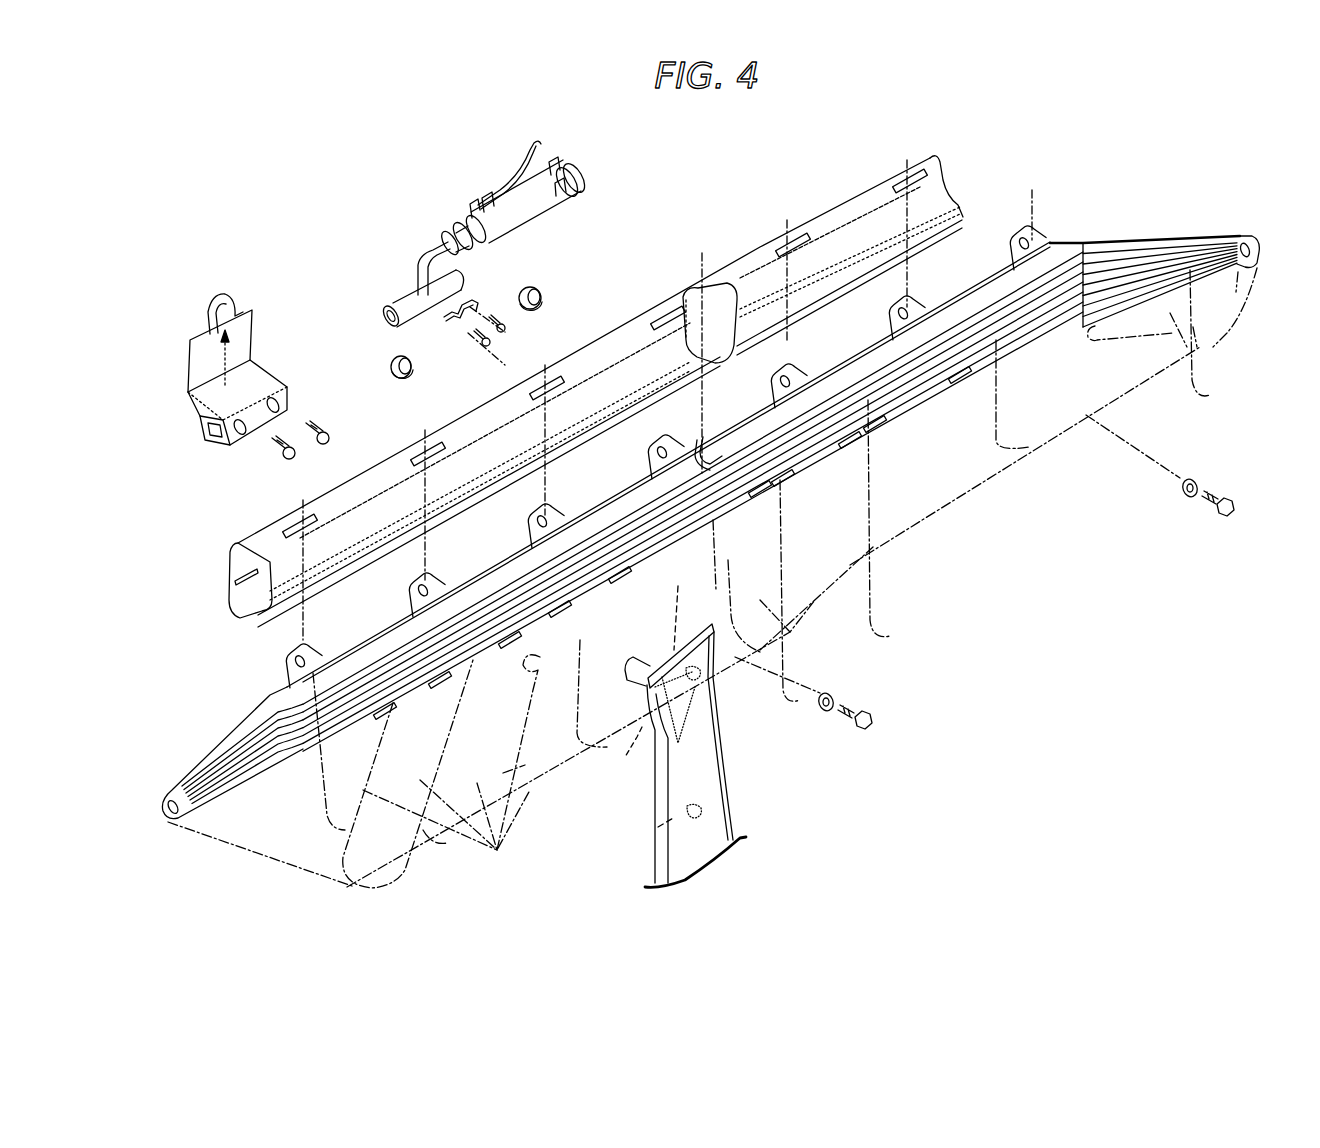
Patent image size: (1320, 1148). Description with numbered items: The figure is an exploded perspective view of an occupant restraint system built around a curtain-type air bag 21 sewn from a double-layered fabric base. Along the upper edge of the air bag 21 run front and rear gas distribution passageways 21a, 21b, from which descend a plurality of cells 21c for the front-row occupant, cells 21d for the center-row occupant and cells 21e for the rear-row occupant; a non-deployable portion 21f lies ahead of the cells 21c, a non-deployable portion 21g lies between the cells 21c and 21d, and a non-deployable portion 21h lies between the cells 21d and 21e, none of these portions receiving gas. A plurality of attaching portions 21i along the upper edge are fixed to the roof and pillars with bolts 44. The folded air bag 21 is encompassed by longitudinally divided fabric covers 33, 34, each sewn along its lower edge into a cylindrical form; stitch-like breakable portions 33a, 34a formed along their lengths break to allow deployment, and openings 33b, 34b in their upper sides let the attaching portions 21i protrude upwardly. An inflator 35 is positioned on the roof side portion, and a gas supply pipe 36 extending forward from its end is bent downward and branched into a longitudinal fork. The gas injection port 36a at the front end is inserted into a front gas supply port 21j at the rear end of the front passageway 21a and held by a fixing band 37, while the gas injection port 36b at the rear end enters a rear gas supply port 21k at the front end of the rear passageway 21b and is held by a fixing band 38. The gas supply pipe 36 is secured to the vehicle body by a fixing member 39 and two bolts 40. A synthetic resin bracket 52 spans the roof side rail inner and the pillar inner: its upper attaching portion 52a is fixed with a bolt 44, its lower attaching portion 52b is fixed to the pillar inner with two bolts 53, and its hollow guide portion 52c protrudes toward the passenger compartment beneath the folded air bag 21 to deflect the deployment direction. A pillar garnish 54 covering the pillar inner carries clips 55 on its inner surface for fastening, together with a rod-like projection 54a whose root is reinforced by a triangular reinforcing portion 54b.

The air bag 21 is at (1116, 236).
The front gas distribution passageway 21a is at (617, 503).
The rear gas distribution passageway 21b is at (986, 283).
The cells 21c is at (499, 850).
The cells 21d is at (840, 632).
The cells 21e is at (1190, 398).
The non-deployable portion 21f is at (262, 833).
The non-deployable portion 21g is at (790, 694).
The non-deployable portion 21h is at (955, 508).
The attaching portions 21i is at (297, 663).
The front gas supply port 21j is at (698, 448).
The rear gas supply port 21k is at (712, 458).
The fabric cover 33 is at (541, 413).
The breakable portions 33a is at (234, 578).
The openings 33b is at (292, 518).
The fabric cover 34 is at (856, 253).
The breakable portions 34a is at (843, 200).
The openings 34b is at (780, 243).
The inflator 35 is at (530, 206).
The gas supply pipe 36 is at (439, 281).
The gas injection port 36a is at (394, 306).
The gas injection port 36b is at (455, 280).
The fixing band 37 is at (389, 366).
The fixing band 38 is at (545, 290).
The fixing member 39 is at (478, 303).
The bolts 40 is at (506, 346).
The bolts 44 is at (868, 712).
The bracket 52 is at (246, 354).
The attaching portion 52a is at (222, 298).
The attaching portion 52b is at (200, 422).
The guide portion 52c is at (262, 378).
The bolts 53 is at (284, 438).
The pillar garnish 54 is at (709, 723).
The projection 54a is at (641, 655).
The reinforcing portion 54b is at (640, 752).
The clips 55 is at (634, 836).